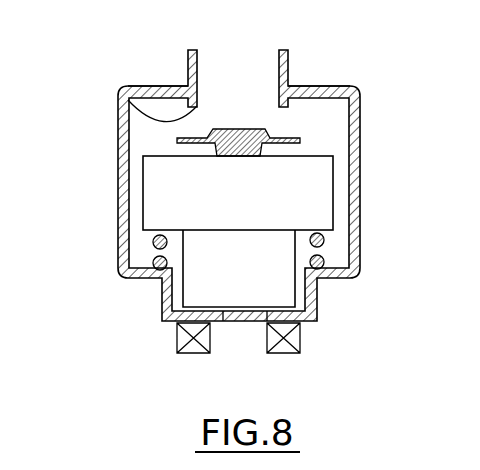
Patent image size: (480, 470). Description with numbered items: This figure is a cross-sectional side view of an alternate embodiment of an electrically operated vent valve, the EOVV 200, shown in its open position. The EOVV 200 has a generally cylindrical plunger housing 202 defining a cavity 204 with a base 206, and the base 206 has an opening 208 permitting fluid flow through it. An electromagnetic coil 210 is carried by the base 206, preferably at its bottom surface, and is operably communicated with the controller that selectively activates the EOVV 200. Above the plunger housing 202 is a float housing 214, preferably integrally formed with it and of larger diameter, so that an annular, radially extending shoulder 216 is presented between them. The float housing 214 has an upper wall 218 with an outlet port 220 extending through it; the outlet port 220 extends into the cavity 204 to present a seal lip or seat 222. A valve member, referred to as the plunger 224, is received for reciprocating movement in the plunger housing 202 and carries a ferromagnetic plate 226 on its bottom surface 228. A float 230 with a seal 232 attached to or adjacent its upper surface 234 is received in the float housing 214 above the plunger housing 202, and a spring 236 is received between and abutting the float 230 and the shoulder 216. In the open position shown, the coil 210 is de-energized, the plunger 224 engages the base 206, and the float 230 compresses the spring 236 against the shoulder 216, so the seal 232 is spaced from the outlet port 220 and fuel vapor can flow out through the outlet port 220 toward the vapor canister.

The EOVV 200 is at (366, 61).
The plunger housing 202 is at (317, 302).
The cavity 204 is at (162, 295).
The base 206 is at (305, 325).
The opening 208 is at (244, 322).
The electromagnetic coil 210 is at (300, 350).
The float housing 214 is at (360, 178).
The shoulder 216 is at (358, 254).
The upper wall 218 is at (328, 86).
The outlet port 220 is at (188, 68).
The seal lip or seat 222 is at (123, 108).
The valve member (plunger) 224 is at (183, 248).
The ferromagnetic plate 226 is at (178, 328).
The bottom surface 228 is at (210, 325).
The float 230 is at (333, 208).
The seal 232 is at (177, 140).
The upper surface 234 is at (318, 156).
The spring 236 is at (155, 240).